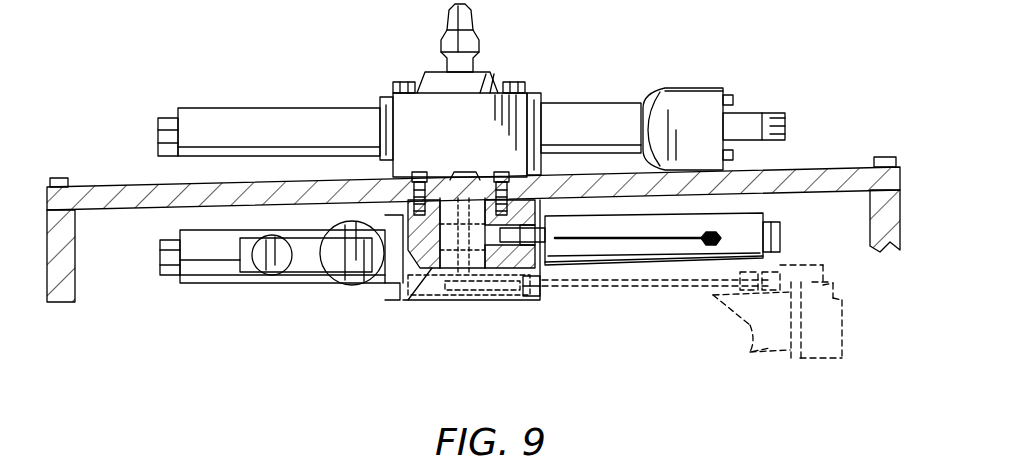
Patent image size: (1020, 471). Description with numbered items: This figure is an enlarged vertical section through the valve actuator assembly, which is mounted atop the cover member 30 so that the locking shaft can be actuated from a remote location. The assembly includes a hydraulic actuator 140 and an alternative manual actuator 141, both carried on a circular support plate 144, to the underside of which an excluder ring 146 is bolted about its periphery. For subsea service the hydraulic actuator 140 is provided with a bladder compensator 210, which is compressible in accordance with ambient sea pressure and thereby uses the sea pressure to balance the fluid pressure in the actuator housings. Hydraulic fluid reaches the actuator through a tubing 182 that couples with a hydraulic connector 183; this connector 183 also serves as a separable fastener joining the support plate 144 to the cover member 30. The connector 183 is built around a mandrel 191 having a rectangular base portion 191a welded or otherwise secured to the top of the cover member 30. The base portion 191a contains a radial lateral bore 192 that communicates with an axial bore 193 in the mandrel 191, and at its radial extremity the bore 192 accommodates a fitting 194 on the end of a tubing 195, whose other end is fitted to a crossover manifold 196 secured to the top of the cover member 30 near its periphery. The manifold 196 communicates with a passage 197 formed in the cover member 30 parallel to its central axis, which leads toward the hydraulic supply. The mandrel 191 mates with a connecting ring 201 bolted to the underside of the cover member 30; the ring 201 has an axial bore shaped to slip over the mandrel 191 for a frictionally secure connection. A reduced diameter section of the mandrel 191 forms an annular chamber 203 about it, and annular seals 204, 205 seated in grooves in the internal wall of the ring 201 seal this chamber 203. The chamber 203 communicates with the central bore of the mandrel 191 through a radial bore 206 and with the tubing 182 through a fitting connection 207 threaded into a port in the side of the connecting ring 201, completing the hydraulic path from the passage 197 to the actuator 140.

The manual actuator 141 is at (272, 108).
The support plate 144 is at (148, 192).
The excluder ring 146 is at (78, 282).
The hydraulic actuator 140 is at (282, 284).
The bladder compensator 210 is at (352, 262).
The hydraulic connector 183 is at (388, 292).
The annular chamber 203 is at (395, 216).
The annular seal 204 is at (411, 178).
The mandrel 191 is at (463, 172).
The annular seal 205 is at (413, 263).
The axial bore 193 is at (457, 268).
The rectangular base portion 191a is at (468, 298).
The radial lateral bore 192 is at (497, 300).
The radial bore 206 is at (505, 222).
The fitting connection 207 is at (546, 233).
The fitting 194 is at (782, 258).
The connecting ring 201 is at (700, 253).
The tubing 182 is at (632, 262).
The tubing 195 is at (640, 287).
The cover member 30 is at (832, 340).
The crossover manifold 196 is at (828, 282).
The passage 197 is at (772, 350).